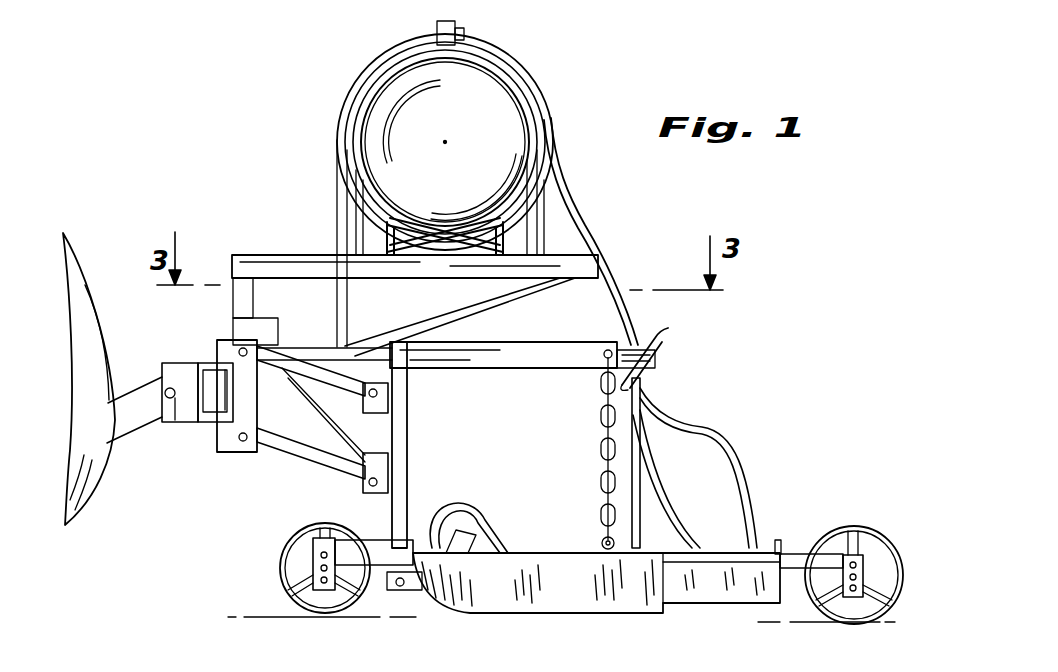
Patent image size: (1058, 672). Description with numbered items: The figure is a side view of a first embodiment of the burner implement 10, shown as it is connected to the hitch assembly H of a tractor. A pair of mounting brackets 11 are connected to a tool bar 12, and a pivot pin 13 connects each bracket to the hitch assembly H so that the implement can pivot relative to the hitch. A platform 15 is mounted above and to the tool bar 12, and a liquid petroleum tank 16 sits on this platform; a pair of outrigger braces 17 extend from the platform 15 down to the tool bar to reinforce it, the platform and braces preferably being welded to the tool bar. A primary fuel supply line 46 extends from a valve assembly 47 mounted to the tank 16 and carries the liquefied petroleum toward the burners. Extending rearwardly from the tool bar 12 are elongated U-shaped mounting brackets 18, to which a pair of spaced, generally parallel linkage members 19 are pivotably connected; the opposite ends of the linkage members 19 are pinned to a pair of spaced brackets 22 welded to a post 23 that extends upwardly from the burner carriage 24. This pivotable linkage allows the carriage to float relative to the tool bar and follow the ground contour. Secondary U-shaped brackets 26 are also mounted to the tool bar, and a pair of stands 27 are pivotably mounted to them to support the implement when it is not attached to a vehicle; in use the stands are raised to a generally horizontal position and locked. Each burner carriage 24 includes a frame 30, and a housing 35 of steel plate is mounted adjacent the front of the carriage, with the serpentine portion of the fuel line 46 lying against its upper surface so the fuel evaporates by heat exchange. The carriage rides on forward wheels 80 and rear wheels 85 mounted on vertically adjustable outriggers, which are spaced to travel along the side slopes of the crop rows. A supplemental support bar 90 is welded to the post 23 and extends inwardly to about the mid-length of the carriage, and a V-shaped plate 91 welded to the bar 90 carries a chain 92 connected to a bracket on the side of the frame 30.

The burner implement 10 is at (305, 192).
The mounting brackets 11 is at (162, 422).
The tool bar 12 is at (205, 424).
The pivot pin 13 is at (176, 388).
The platform 15 is at (272, 255).
The liquid petroleum tank 16 is at (520, 100).
The outrigger braces 17 is at (460, 317).
The U-shaped mounting brackets 18 is at (232, 452).
The linkage members 19 is at (358, 388).
The brackets 22 is at (388, 398).
The post 23 is at (408, 432).
The burner carriage 24 is at (450, 623).
The secondary U-shaped brackets 26 is at (695, 468).
The stands 27 is at (662, 360).
The frame 30 is at (560, 515).
The housing 35 is at (565, 616).
The primary fuel supply line 46 is at (345, 100).
The valve assembly 47 is at (437, 30).
The forward wheel 80 is at (280, 573).
The rear wheel 85 is at (880, 490).
The supplemental support bar 90 is at (545, 326).
The V-shaped plate 91 is at (608, 350).
The chain 92 is at (600, 428).
The hitch assembly H is at (150, 408).